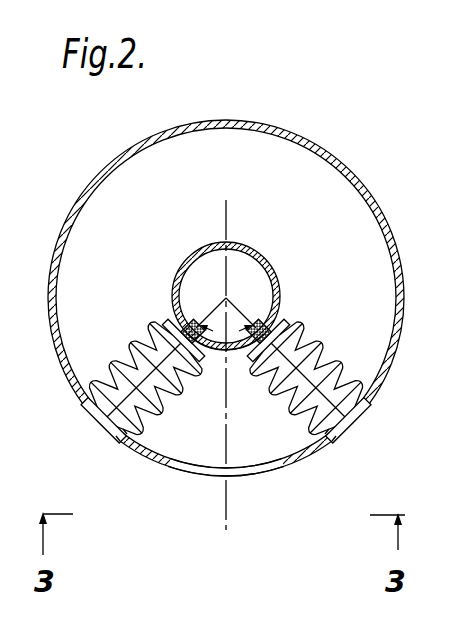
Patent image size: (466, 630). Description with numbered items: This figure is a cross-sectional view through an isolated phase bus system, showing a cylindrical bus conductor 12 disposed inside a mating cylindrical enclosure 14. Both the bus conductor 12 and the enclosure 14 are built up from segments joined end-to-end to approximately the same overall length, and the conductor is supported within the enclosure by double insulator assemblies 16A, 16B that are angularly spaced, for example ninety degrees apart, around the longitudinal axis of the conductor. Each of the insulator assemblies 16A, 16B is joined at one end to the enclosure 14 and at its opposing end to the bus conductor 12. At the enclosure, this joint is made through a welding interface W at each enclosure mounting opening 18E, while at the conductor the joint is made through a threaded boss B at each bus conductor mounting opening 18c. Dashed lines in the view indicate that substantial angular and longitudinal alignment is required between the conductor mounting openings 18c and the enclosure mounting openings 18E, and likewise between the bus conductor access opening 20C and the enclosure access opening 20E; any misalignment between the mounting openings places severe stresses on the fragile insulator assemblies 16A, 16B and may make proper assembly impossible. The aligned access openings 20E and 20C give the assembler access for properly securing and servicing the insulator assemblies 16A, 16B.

The cylindrical bus conductor 12 is at (242, 244).
The cylindrical enclosure 14 is at (345, 162).
The double insulator assembly 16A is at (123, 352).
The double insulator assembly 16B is at (335, 360).
The bus conductor mounting opening 18c is at (186, 316).
The enclosure mounting opening 18E is at (113, 411).
The bus conductor access opening 20C is at (229, 352).
The enclosure access opening 20E is at (244, 474).
The threaded boss B is at (226, 318).
The welding interface W is at (111, 438).